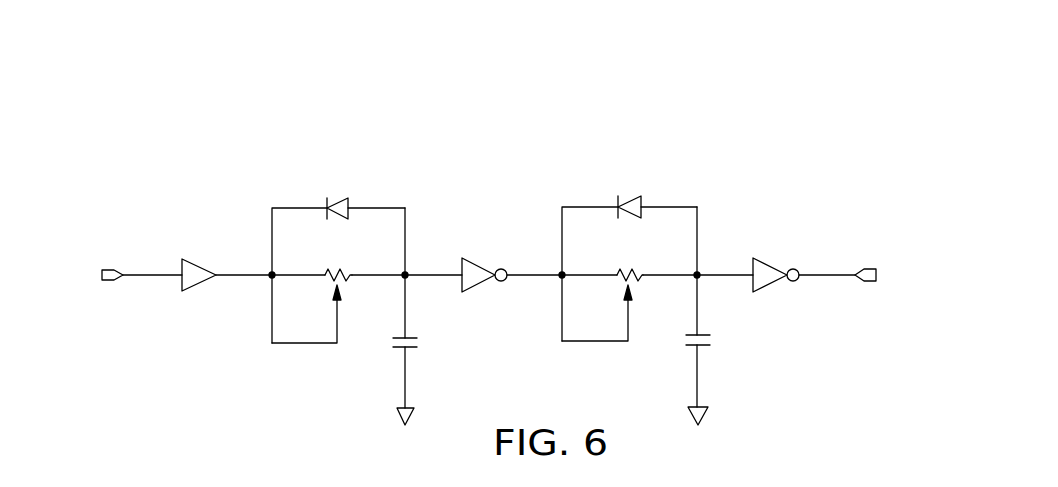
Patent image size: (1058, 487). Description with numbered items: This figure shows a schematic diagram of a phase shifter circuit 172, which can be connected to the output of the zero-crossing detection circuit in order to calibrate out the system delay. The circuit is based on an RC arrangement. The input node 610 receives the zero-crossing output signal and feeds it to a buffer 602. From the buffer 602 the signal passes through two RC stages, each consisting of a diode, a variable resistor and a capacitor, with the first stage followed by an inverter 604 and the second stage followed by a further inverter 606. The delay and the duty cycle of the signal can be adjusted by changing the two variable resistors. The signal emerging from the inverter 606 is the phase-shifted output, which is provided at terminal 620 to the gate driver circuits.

The phase shifter circuit 172 is at (255, 125).
The buffer 602 is at (197, 267).
The inverter 604 is at (480, 268).
The inverter 606 is at (773, 263).
The input node 610 is at (110, 271).
The terminal 620 is at (868, 264).